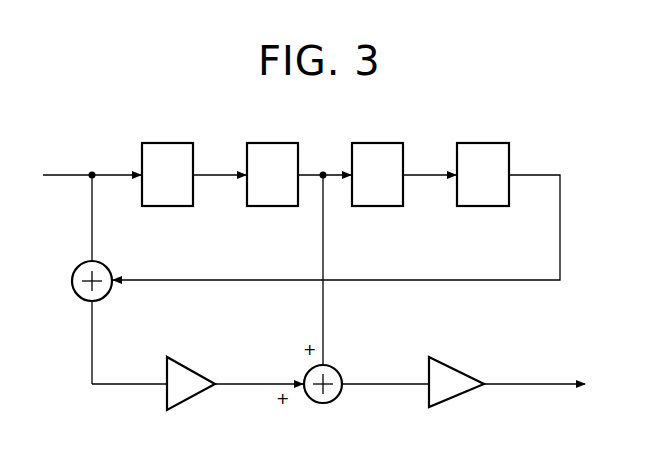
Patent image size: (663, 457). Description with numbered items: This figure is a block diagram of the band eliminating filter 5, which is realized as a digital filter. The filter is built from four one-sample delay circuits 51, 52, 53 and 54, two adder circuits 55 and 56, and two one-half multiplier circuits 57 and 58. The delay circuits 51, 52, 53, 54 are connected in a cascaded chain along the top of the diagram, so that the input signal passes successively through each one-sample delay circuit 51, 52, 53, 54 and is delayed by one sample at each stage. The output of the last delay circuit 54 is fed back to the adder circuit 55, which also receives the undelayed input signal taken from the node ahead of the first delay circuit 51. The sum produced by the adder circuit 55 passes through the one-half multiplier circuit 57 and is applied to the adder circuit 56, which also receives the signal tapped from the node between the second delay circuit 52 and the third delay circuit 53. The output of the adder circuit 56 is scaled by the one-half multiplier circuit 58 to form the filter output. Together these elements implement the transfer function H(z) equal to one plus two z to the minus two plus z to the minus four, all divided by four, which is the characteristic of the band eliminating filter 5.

The band eliminating filter 5 is at (57, 363).
The one-sample delay circuit 51 is at (168, 143).
The one-sample delay circuit 52 is at (262, 143).
The one-sample delay circuit 53 is at (378, 143).
The one-sample delay circuit 54 is at (487, 143).
The adder circuit 55 is at (108, 266).
The adder circuit 56 is at (335, 368).
The 1/2 multiplier circuit 57 is at (190, 364).
The 1/2 multiplier circuit 58 is at (462, 368).